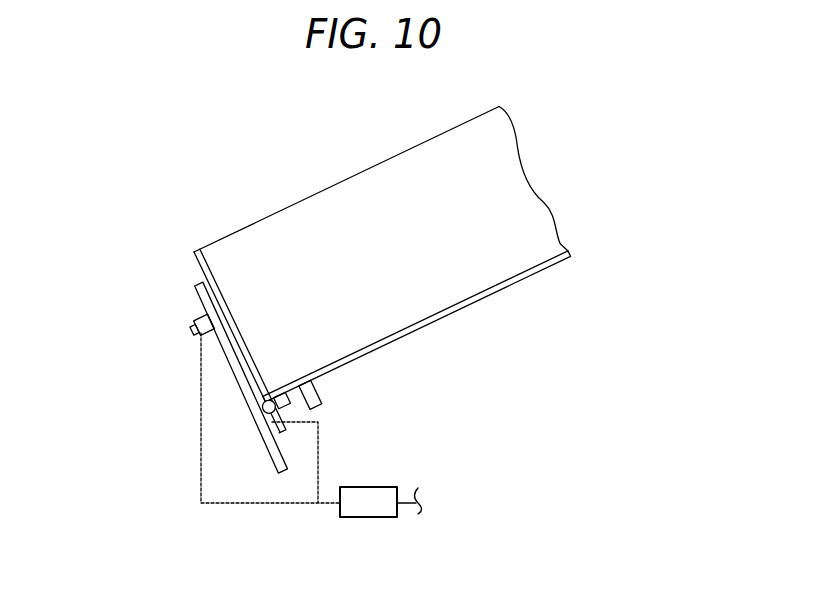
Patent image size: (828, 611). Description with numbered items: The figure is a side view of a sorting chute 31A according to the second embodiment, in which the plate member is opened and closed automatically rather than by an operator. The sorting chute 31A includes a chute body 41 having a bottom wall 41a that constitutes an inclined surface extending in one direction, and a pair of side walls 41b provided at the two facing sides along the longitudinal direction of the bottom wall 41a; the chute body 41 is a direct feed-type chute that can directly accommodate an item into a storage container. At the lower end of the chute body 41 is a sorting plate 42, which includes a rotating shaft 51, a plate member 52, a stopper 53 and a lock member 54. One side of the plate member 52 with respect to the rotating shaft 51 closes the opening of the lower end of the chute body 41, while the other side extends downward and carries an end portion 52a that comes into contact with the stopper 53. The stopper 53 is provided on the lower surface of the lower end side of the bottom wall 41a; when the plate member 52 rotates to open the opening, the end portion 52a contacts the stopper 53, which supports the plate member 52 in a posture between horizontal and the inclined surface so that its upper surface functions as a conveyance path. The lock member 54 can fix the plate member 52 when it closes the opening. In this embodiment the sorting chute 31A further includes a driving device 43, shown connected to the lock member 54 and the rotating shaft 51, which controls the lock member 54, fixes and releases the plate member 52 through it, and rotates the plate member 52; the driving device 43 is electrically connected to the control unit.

The sorting chute 31A is at (566, 130).
The chute body 41 is at (566, 193).
The bottom wall 41a is at (463, 305).
The side walls 41b is at (426, 162).
The sorting plate 42 is at (170, 262).
The driving device 43 is at (368, 518).
The rotating shaft 51 is at (277, 410).
The plate member 52 is at (238, 395).
The end portion 52a is at (268, 458).
The stopper 53 is at (316, 397).
The lock member 54 is at (190, 332).